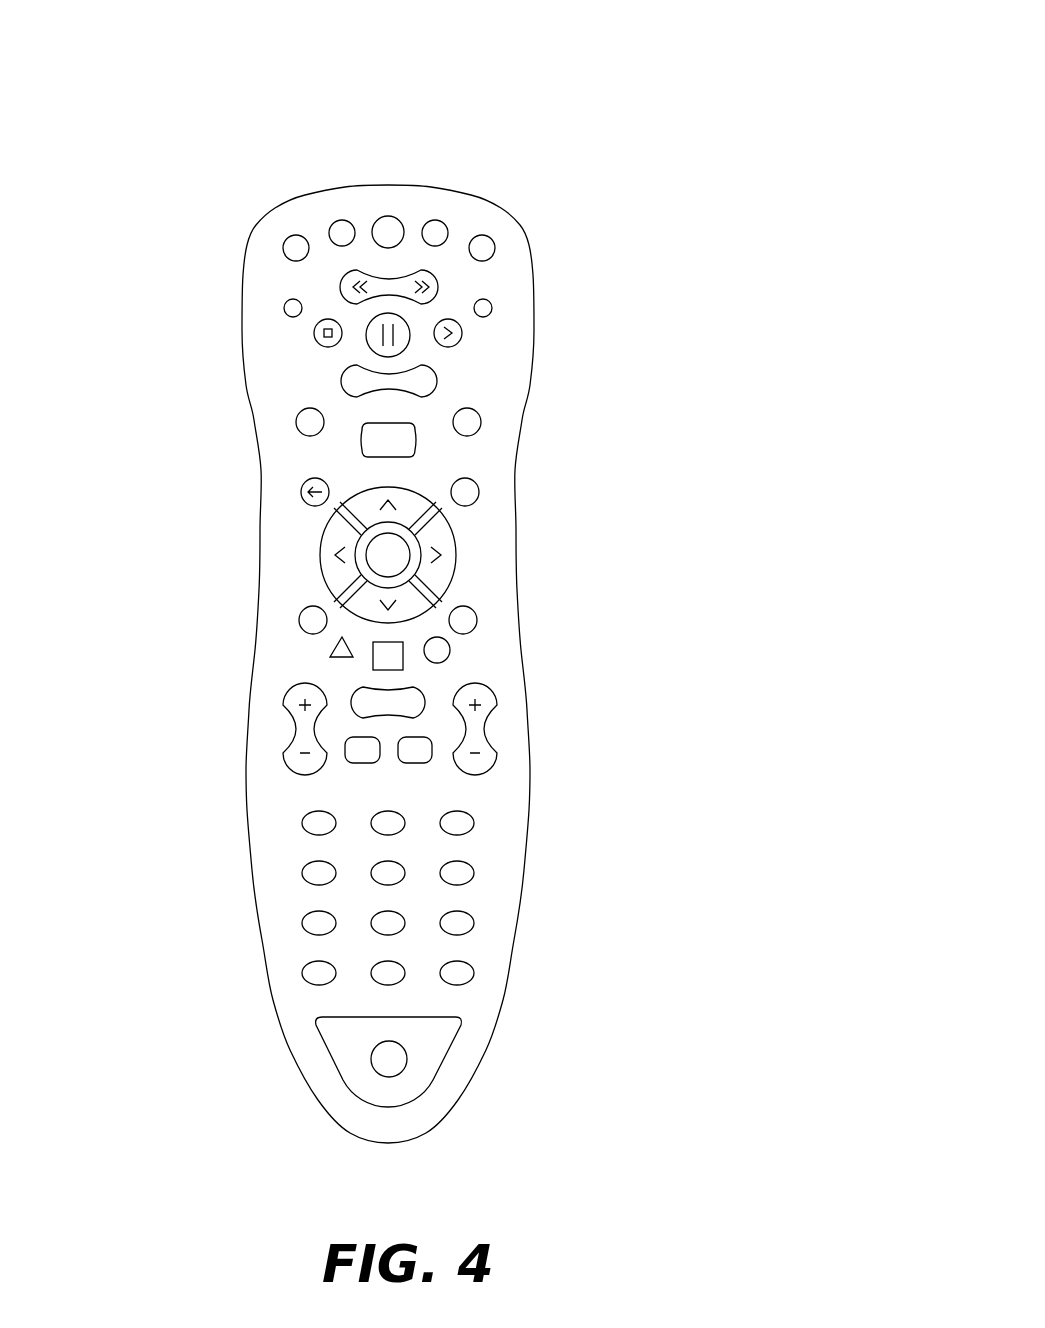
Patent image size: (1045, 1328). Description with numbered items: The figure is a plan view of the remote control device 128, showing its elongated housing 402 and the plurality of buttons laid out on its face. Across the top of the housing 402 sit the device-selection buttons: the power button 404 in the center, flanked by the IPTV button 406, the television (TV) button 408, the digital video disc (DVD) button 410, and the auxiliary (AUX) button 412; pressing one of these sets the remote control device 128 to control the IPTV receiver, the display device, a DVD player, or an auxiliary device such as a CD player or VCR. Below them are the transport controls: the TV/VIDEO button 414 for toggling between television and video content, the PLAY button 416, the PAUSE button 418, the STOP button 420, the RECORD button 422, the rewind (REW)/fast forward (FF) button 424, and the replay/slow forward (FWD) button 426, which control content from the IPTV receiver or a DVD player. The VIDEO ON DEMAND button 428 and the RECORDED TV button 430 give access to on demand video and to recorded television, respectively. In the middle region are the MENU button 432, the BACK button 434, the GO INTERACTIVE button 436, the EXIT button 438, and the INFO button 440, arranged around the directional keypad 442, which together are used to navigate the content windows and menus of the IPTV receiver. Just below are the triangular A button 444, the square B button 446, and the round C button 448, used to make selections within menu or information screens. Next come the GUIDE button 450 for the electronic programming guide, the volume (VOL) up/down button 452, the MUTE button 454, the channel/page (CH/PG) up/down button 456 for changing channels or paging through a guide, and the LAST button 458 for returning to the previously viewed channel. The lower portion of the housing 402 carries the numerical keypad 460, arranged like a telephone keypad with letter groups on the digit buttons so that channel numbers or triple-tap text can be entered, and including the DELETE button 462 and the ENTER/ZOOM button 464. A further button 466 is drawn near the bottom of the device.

The remote control device 128 is at (657, 130).
The housing 402 is at (520, 263).
The power button 404 is at (388, 227).
The IPTV button 406 is at (297, 245).
The television (TV) button 408 is at (340, 223).
The digital video disc (DVD) button 410 is at (435, 226).
The auxiliary (AUX) button 412 is at (480, 242).
The TV/VIDEO button 414 is at (485, 306).
The PLAY button 416 is at (447, 333).
The PAUSE button 418 is at (377, 337).
The STOP button 420 is at (325, 333).
The RECORD button 422 is at (295, 307).
The rewind (REW)/fast forward (FF) button 424 is at (353, 290).
The replay/slow forward (FWD) button 426 is at (350, 382).
The VIDEO ON DEMAND button 428 is at (303, 422).
The RECORDED TV button 430 is at (472, 422).
The MENU button 432 is at (363, 450).
The BACK button 434 is at (303, 495).
The GO INTERACTIVE button 436 is at (465, 497).
The EXIT button 438 is at (302, 627).
The INFO button 440 is at (460, 628).
The directional keypad 442 is at (320, 553).
The triangular A button 444 is at (330, 655).
The square B button 446 is at (378, 667).
The round C button 448 is at (447, 657).
The GUIDE button 450 is at (368, 713).
The volume (VOL) up/down button 452 is at (295, 713).
The MUTE button 454 is at (357, 762).
The channel/page (CH/PG) up/down button 456 is at (483, 712).
The LAST button 458 is at (417, 762).
The numerical keypad 460 is at (473, 803).
The DELETE button 462 is at (312, 975).
The ENTER/ZOOM button 464 is at (455, 980).
The silence button 466 is at (355, 1065).